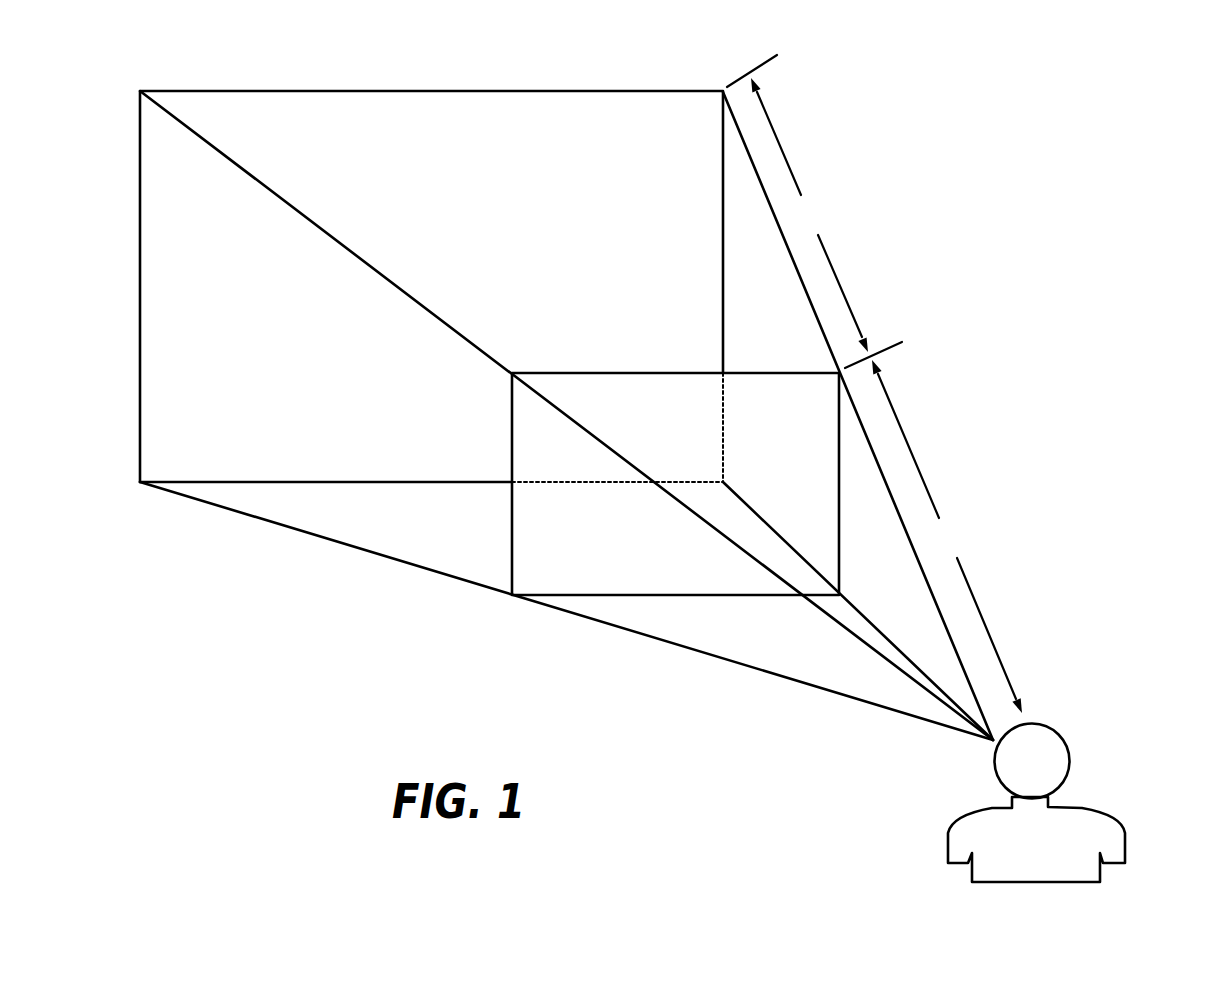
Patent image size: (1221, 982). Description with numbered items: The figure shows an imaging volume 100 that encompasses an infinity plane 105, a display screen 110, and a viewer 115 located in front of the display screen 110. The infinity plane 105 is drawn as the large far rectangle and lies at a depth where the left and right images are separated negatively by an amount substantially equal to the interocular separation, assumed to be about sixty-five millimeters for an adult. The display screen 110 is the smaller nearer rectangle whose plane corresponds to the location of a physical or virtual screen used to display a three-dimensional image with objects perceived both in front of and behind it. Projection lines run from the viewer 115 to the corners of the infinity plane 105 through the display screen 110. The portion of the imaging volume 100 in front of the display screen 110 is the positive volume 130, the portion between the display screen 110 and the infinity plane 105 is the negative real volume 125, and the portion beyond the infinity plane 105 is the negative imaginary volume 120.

The imaging volume 100 is at (262, 562).
The infinity plane 105 is at (498, 90).
The display screen 110 is at (653, 372).
The viewer 115 is at (1100, 810).
The negative imaginary volume 120 is at (744, 64).
The negative real volume 125 is at (826, 223).
The positive volume 130 is at (947, 536).